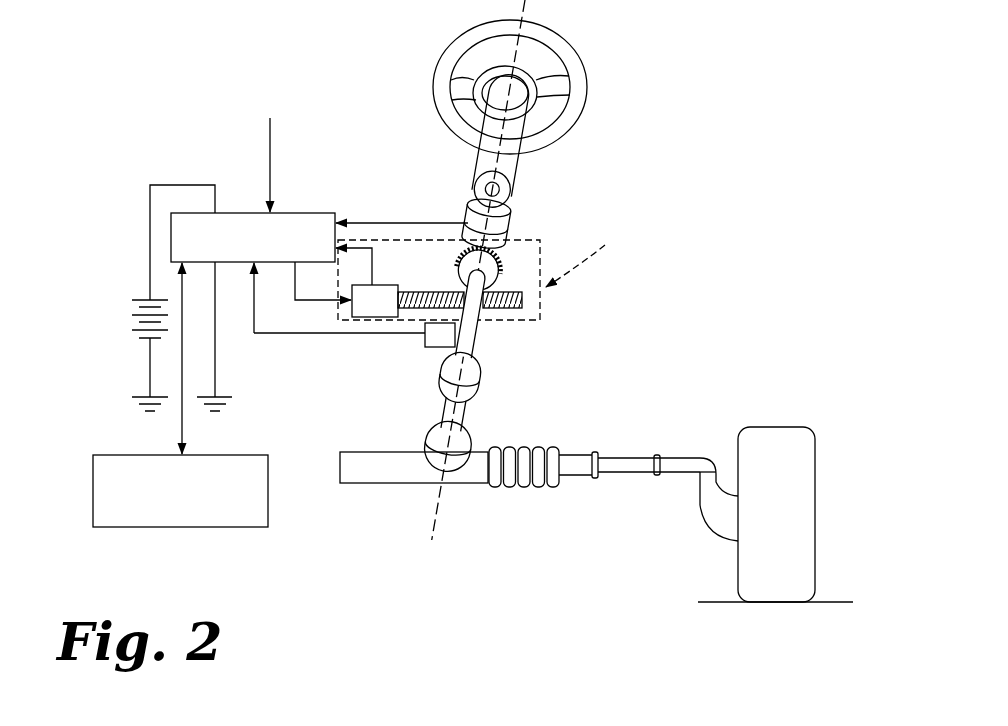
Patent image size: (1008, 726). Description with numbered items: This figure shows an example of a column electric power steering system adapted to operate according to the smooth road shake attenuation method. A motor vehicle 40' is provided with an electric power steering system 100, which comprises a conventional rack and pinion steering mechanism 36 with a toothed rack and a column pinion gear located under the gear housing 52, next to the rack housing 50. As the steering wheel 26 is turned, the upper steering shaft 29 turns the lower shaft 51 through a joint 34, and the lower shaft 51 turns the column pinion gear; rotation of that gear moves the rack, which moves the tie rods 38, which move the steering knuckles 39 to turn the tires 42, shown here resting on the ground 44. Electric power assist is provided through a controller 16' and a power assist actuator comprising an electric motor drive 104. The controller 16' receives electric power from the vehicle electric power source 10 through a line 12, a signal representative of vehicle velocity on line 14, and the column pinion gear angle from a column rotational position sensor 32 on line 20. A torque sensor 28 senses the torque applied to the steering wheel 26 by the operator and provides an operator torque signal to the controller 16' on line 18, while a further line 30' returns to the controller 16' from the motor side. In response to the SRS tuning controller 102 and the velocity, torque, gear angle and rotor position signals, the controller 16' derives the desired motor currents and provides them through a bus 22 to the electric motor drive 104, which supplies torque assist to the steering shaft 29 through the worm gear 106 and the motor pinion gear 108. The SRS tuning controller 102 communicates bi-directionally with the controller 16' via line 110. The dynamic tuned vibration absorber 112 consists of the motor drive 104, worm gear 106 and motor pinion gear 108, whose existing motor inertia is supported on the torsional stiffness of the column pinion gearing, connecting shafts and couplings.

The vehicle electric power source 10 is at (132, 310).
The line 12 is at (162, 185).
The line 14 is at (270, 146).
The controller 16' is at (253, 193).
The line 18 is at (368, 222).
The line 20 is at (298, 334).
The bus 22 is at (315, 302).
The steering wheel 26 is at (560, 43).
The torque sensor 28 is at (472, 215).
The upper steering shaft 29 is at (497, 196).
The motor feedback line 30' is at (392, 265).
The column rotational position sensor 32 is at (432, 347).
The joint 34 is at (478, 375).
The rack and pinion steering mechanism 36 is at (513, 492).
The tie rods 38 is at (608, 476).
The steering knuckles 39 is at (717, 518).
The motor vehicle 40' is at (710, 347).
The tires 42 is at (775, 427).
The ground 44 is at (820, 604).
The rack housing 50 is at (377, 473).
The lower shaft 51 is at (466, 410).
The gear housing 52 is at (426, 437).
The electric power steering system 100 is at (631, 289).
The SRS tuning controller 102 is at (217, 527).
The electric motor drive 104 is at (389, 319).
The worm gear 106 is at (522, 300).
The motor pinion gear 108 is at (497, 260).
The line 110 is at (180, 422).
The dynamic tuned vibration absorber 112 is at (595, 253).